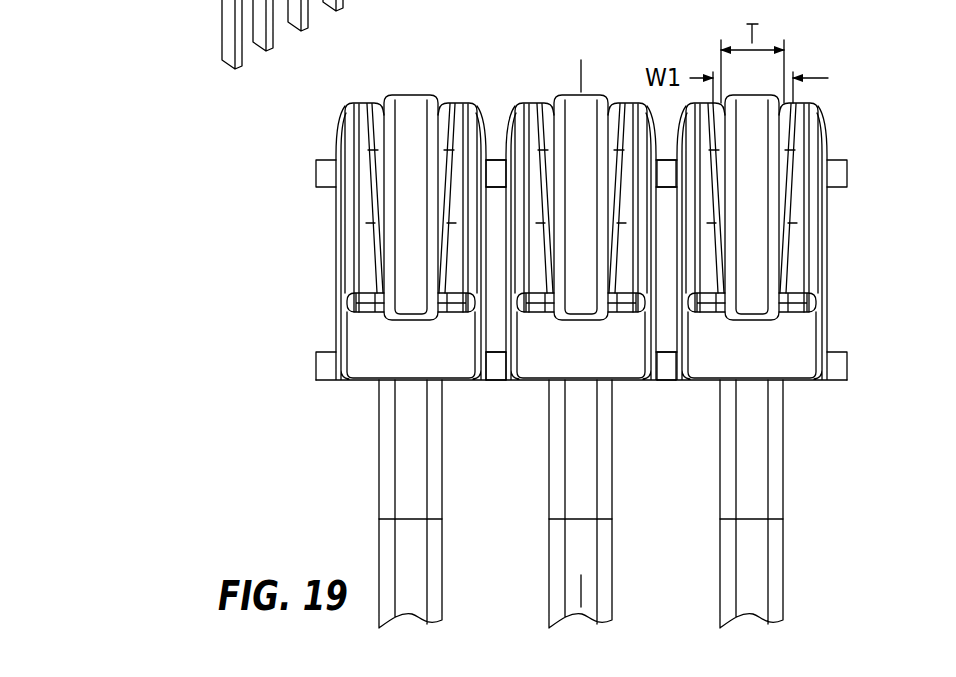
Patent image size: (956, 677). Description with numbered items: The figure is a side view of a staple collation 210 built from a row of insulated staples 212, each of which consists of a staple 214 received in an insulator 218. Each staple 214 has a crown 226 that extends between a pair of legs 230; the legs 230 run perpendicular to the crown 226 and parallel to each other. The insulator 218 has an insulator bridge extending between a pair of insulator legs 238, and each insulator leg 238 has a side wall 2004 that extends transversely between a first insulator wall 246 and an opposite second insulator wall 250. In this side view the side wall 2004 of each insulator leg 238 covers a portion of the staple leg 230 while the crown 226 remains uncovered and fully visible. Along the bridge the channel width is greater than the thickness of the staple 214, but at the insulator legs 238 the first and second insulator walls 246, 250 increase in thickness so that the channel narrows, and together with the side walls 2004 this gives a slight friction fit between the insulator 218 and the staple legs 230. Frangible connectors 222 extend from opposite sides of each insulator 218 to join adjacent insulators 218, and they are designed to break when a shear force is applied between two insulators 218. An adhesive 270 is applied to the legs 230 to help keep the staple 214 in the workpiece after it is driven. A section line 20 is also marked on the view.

The section line 20 is at (580, 75).
The staple collation 210 is at (562, 324).
The insulated staple 212 is at (562, 287).
The staple 214 is at (542, 504).
The insulator 218 is at (345, 211).
The frangible connector 222 is at (322, 172).
The crown 226 is at (408, 108).
The leg 230 is at (387, 490).
The insulator leg 238 is at (345, 257).
The first insulator wall 246 is at (564, 164).
The second insulator wall 250 is at (458, 105).
The adhesive 270 is at (387, 563).
The side wall 2004 is at (412, 353).